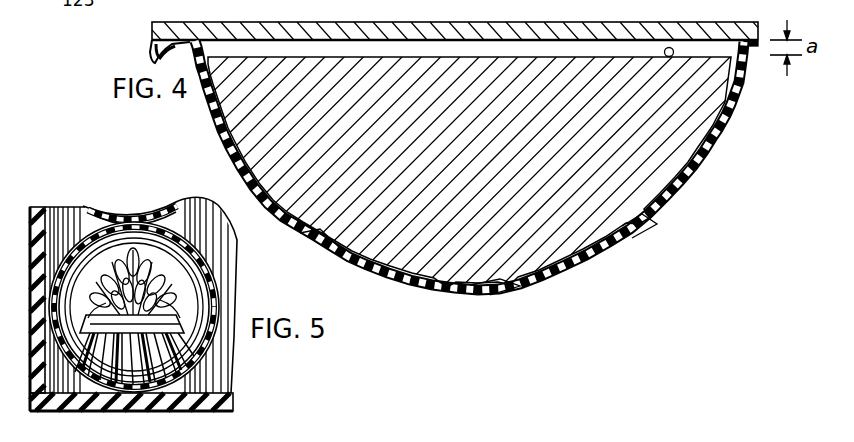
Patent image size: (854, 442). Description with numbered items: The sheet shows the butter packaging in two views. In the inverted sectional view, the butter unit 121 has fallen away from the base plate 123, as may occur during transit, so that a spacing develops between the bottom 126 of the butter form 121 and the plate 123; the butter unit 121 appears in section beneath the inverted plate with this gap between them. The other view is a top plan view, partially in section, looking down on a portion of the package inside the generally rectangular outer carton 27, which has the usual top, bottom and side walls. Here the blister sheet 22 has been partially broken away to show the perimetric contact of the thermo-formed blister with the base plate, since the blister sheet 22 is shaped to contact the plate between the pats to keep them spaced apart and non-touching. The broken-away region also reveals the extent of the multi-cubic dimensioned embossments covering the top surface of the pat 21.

In FIG. 4, the base plate 123 is at (735, 22).
In FIG. 4, the butter unit 121 is at (633, 200).
In FIG. 4, the bottom of the butter form 126 is at (672, 56).
In FIG. 5, the outer carton 27 is at (45, 208).
In FIG. 5, the blister sheet 22 is at (163, 228).
In FIG. 5, the pat 21 is at (188, 312).